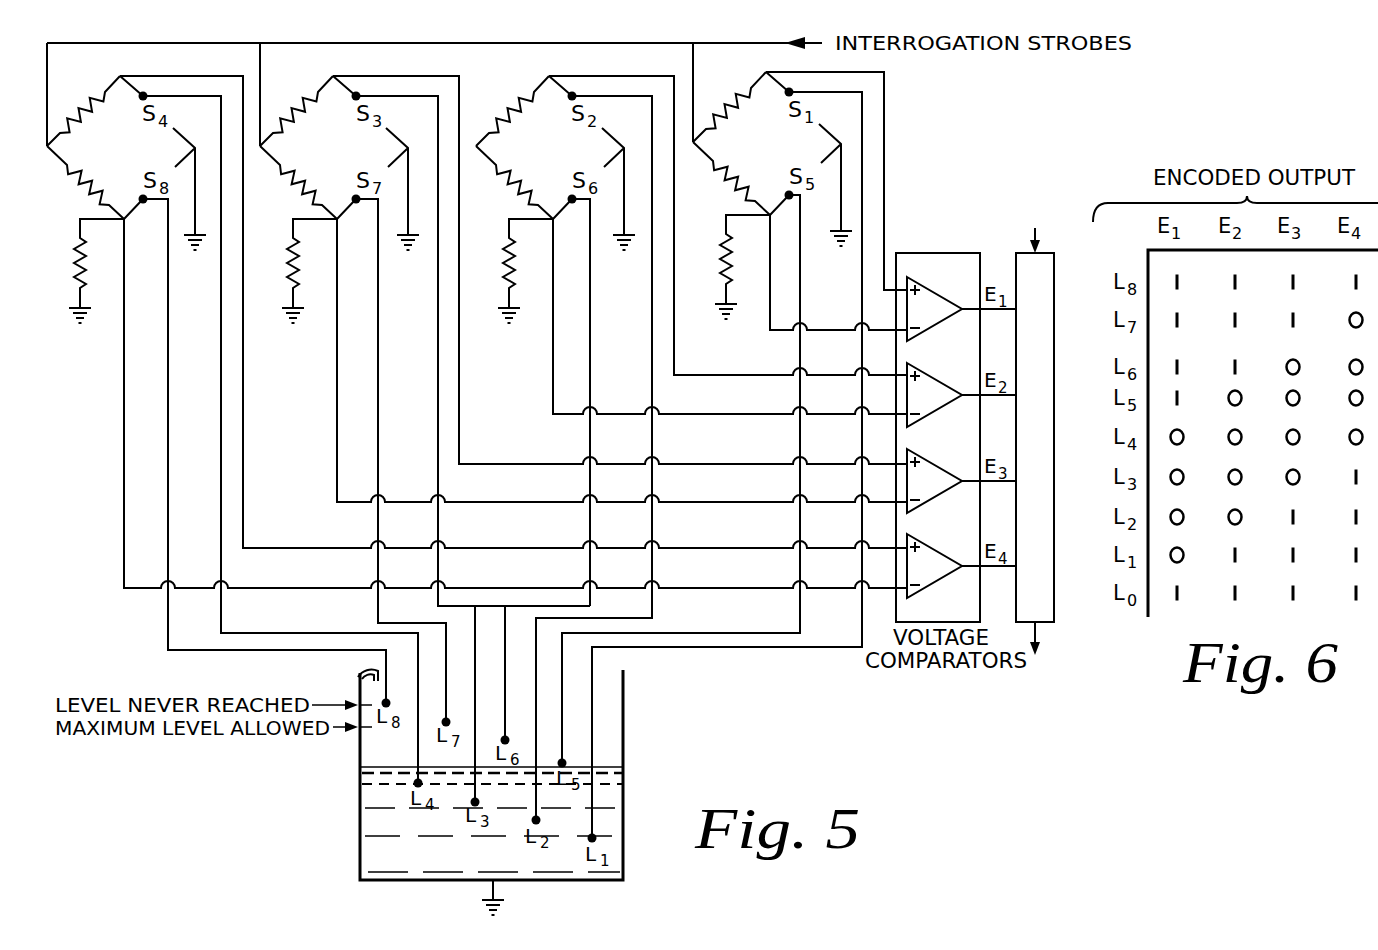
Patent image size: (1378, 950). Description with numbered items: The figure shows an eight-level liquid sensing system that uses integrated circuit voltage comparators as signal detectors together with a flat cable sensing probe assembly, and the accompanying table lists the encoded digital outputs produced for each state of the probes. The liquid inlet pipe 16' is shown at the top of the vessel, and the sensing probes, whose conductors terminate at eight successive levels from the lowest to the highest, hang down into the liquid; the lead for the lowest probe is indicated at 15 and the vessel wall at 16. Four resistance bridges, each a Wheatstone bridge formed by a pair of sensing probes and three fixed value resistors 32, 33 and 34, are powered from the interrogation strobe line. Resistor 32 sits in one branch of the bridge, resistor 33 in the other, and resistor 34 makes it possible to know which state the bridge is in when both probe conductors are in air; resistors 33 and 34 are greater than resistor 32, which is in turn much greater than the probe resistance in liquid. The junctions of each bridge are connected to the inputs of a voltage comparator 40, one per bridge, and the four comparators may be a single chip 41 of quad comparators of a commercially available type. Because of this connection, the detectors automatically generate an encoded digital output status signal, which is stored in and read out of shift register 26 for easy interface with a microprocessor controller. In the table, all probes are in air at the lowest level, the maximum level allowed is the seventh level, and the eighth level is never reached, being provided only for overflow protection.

The fixed value resistor 32 is at (78, 110).
The fixed value resistor 33 is at (106, 191).
The fixed value resistor 34 is at (79, 261).
The voltage comparator 40 is at (940, 302).
The single chip of quad comparators 41 is at (947, 258).
The shift register 26 is at (1041, 431).
The probe lead 15 is at (597, 648).
The tank 16 is at (527, 775).
The liquid inlet pipe 16' is at (341, 667).